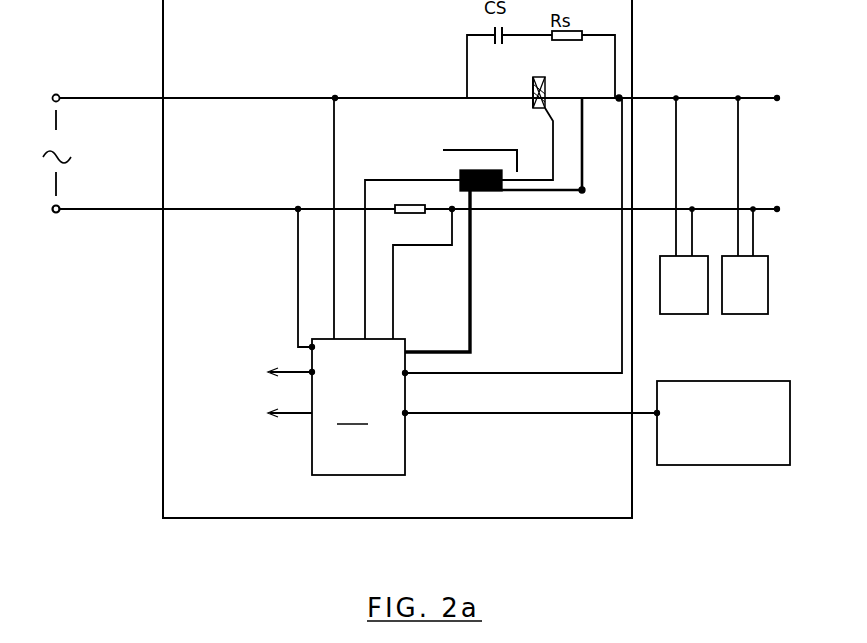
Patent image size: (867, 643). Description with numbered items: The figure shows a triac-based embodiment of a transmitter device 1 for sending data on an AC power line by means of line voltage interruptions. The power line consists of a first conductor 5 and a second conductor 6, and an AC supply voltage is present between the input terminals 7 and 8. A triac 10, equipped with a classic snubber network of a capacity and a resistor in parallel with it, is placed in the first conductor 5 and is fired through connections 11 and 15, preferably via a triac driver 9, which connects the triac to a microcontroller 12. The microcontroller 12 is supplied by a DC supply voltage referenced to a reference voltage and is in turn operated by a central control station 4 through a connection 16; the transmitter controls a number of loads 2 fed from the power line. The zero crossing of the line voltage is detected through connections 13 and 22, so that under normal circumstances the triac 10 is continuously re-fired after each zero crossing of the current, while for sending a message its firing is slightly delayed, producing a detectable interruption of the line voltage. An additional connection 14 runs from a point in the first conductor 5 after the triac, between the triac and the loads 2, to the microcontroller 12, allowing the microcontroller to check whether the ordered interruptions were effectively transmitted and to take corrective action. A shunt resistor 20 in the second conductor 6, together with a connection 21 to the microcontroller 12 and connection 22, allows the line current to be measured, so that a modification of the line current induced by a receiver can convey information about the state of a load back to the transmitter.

The device 1 is at (215, 500).
The loads 2 is at (683, 288).
The central control station 4 is at (754, 452).
The first conductor 5 is at (97, 98).
The second conductor 6 is at (104, 212).
The input terminal 7 is at (55, 93).
The input terminal 8 is at (54, 215).
The triac driver 9 is at (485, 194).
The triac 10 is at (533, 105).
The connection 11 is at (461, 156).
The microcontroller 12 is at (309, 407).
The connection 13 is at (333, 152).
The additional connection 14 is at (543, 370).
The connection 15 is at (573, 195).
The connection 16 is at (500, 415).
The resistor 20 is at (397, 216).
The connection 21 is at (395, 289).
The connection 22 is at (296, 305).